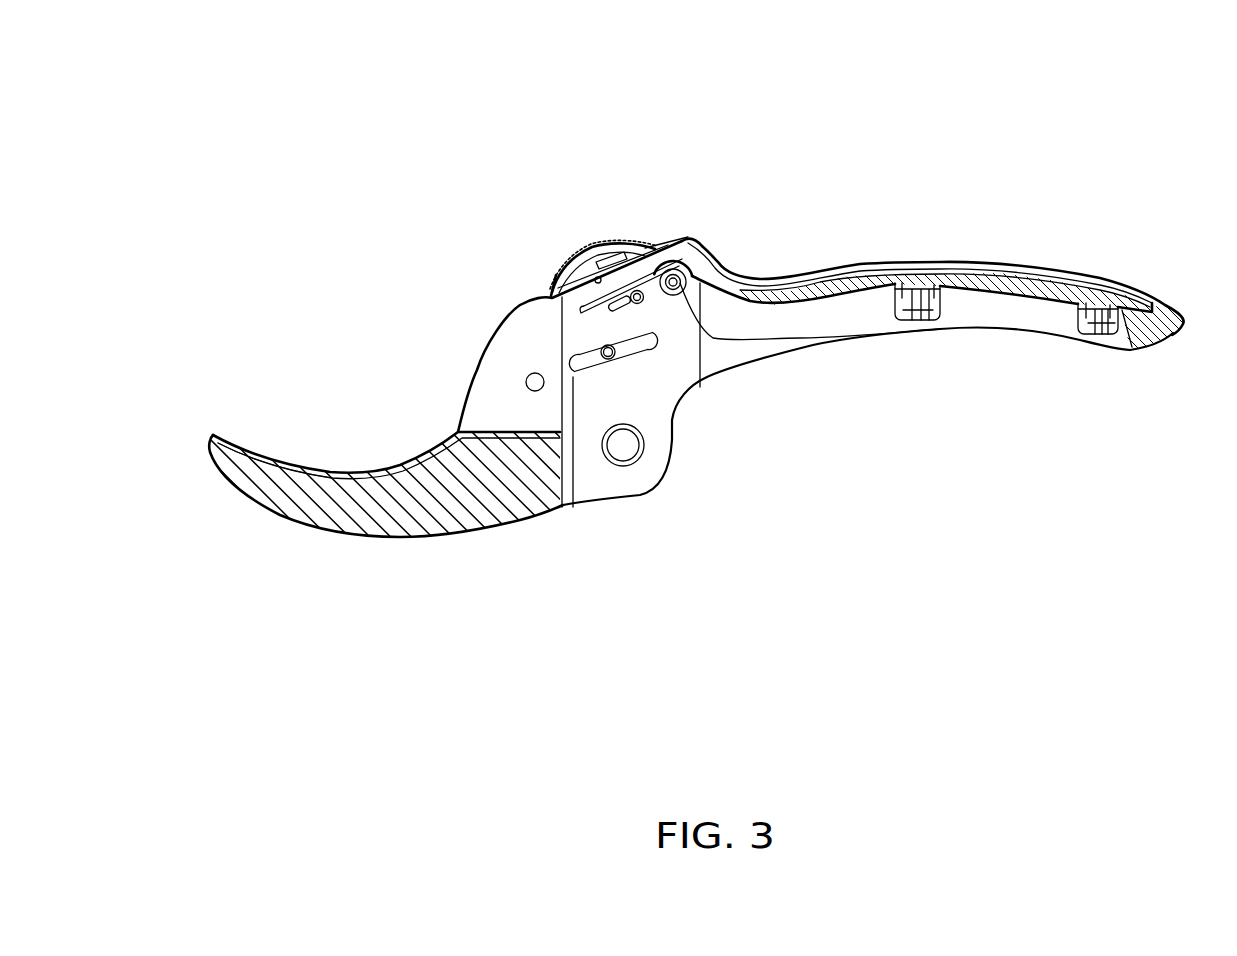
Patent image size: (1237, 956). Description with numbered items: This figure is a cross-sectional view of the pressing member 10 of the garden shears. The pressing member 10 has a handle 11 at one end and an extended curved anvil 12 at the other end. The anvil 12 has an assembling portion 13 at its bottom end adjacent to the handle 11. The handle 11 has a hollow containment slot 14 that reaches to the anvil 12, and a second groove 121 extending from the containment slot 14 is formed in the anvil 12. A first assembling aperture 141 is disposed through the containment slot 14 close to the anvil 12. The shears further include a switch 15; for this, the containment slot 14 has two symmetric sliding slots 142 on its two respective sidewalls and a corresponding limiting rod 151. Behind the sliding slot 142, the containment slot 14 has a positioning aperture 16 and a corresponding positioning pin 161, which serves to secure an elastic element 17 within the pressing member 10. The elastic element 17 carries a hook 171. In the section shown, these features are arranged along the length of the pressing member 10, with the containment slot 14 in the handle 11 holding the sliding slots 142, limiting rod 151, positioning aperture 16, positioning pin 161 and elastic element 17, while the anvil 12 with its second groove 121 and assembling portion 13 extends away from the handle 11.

The pressing member 10 is at (867, 234).
The handle 11 is at (1037, 277).
The anvil 12 is at (408, 522).
The second groove 121 is at (347, 480).
The assembling portion 13 is at (621, 447).
The containment slot 14 is at (650, 382).
The first assembling aperture 141 is at (526, 382).
The sliding slot 142 is at (617, 306).
The switch 15 is at (583, 262).
The limiting rod 151 is at (637, 291).
The positioning aperture 16 is at (770, 338).
The positioning pin 161 is at (833, 387).
The elastic element 17 is at (734, 265).
The hook 171 is at (586, 350).